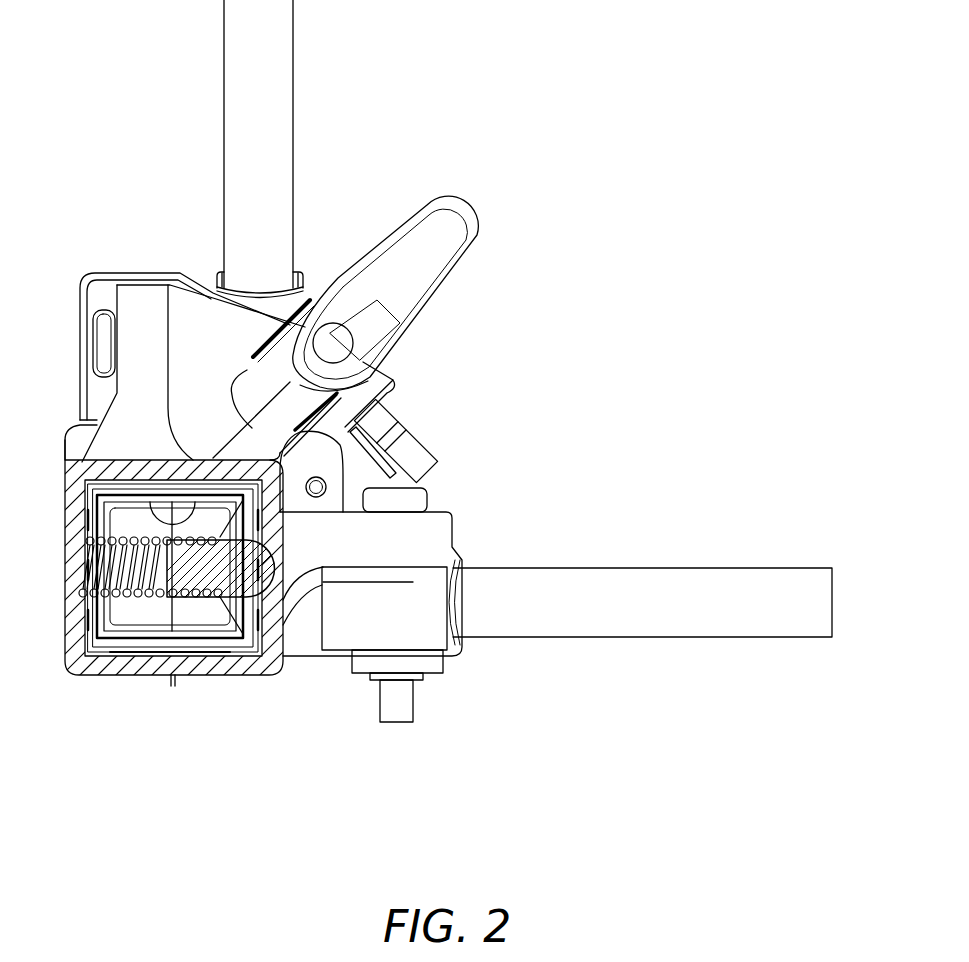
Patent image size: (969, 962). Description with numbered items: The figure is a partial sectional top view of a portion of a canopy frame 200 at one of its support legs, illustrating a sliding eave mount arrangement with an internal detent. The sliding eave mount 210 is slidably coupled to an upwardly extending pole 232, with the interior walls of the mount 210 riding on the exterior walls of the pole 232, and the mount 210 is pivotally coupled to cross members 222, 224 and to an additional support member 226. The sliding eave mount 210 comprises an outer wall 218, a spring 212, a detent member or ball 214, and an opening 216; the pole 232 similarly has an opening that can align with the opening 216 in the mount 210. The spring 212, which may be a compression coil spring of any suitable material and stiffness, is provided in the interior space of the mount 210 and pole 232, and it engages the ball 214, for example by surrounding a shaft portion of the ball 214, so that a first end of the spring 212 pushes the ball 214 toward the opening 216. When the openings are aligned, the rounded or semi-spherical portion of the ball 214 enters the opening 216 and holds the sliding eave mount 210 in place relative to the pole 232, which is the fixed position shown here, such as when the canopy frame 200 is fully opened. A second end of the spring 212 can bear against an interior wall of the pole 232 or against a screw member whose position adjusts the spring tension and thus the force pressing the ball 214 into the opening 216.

The canopy frame 200 is at (608, 141).
The sliding eave mount 210 is at (103, 694).
The spring 212 is at (130, 567).
The detent member or ball 214 is at (222, 597).
The opening 216 is at (280, 556).
The outer wall 218 is at (157, 676).
The cross member 222 is at (617, 573).
The cross member 224 is at (231, 175).
The additional support member 226 is at (410, 243).
The upwardly extending pole 232 is at (250, 515).